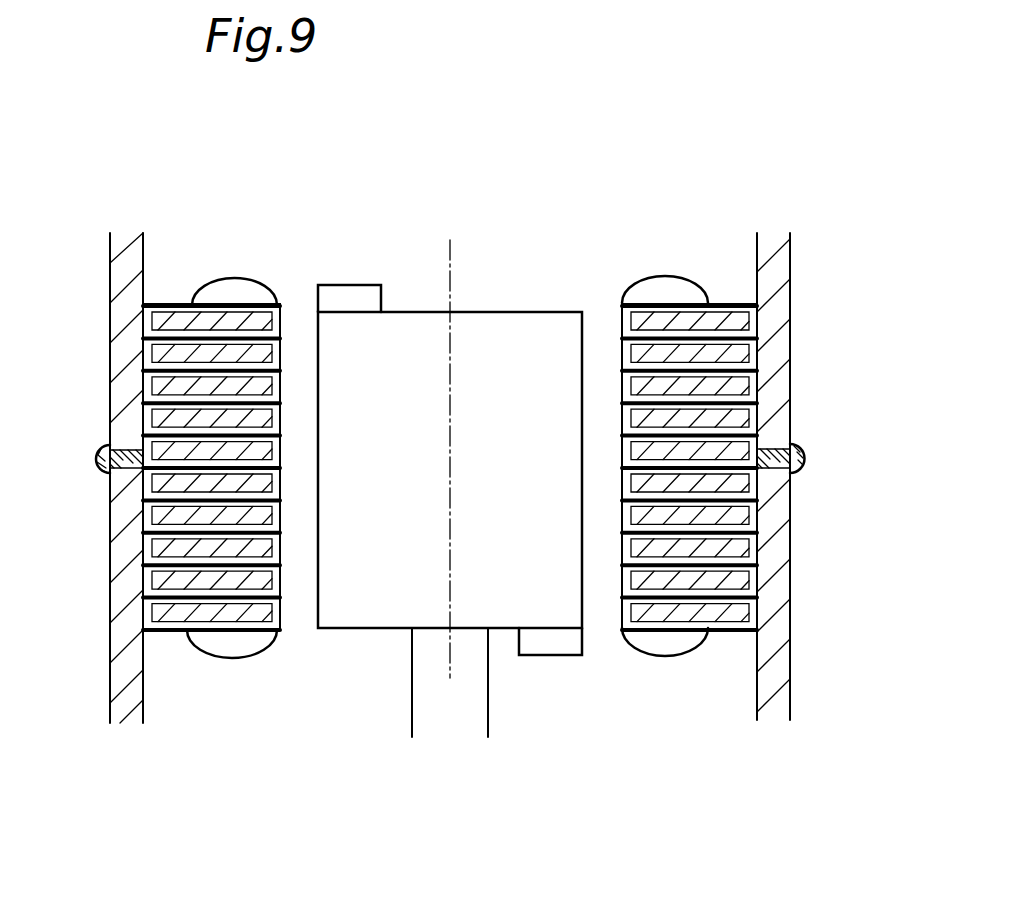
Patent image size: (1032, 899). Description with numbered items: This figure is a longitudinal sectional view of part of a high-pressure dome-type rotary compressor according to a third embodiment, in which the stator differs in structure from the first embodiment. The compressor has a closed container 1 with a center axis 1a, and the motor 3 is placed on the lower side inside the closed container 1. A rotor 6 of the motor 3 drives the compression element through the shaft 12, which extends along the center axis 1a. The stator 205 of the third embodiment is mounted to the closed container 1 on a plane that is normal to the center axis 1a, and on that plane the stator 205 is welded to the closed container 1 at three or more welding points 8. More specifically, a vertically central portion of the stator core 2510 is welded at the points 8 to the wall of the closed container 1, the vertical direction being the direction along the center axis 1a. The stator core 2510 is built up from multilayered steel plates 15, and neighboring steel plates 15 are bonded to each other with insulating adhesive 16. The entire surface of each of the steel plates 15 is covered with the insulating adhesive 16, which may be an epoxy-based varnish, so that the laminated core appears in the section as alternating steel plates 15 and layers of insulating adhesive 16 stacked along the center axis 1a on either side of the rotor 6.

The closed container 1 is at (110, 275).
The center axis 1a is at (450, 245).
The motor 3 is at (540, 290).
The rotor 6 is at (406, 327).
The welding points 8 is at (95, 452).
The shaft 12 is at (472, 698).
The steel plates 15 is at (235, 340).
The insulating adhesive 16 is at (255, 428).
The stator 205 is at (658, 270).
The stator core 2510 is at (690, 305).